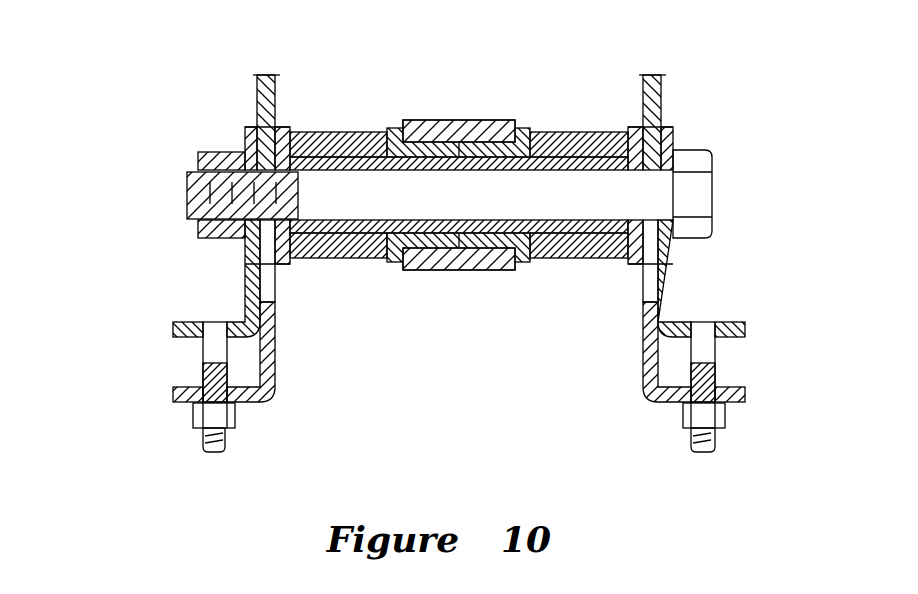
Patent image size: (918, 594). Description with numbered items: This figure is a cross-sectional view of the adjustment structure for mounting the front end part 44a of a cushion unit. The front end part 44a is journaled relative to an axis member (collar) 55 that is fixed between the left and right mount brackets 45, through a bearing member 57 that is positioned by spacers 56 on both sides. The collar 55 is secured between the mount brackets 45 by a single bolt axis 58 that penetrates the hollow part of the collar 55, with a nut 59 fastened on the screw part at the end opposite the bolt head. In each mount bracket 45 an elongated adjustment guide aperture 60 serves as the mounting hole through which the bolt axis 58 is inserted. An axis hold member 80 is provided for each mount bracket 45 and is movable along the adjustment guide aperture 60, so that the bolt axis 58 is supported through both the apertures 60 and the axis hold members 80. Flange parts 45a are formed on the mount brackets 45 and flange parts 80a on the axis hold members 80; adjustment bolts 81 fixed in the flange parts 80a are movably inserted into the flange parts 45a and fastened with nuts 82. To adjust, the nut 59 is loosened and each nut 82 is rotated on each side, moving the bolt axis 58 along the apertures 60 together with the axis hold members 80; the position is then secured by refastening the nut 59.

The mount bracket 45 is at (257, 95).
The nut 59 is at (210, 150).
The spacer 56 is at (333, 131).
The axis member (collar) 55 is at (577, 152).
The bearing member 57 is at (393, 127).
The front end part of the cushion unit 44a is at (470, 119).
The bolt axis 58 is at (655, 193).
The adjustment guide aperture 60 is at (270, 280).
The axis hold member 80 is at (243, 265).
The flange part of the axis hold member 80a is at (173, 325).
The adjustment bolt 81 is at (203, 368).
The nut 82 is at (195, 418).
The flange part of the mount bracket 45a is at (258, 405).